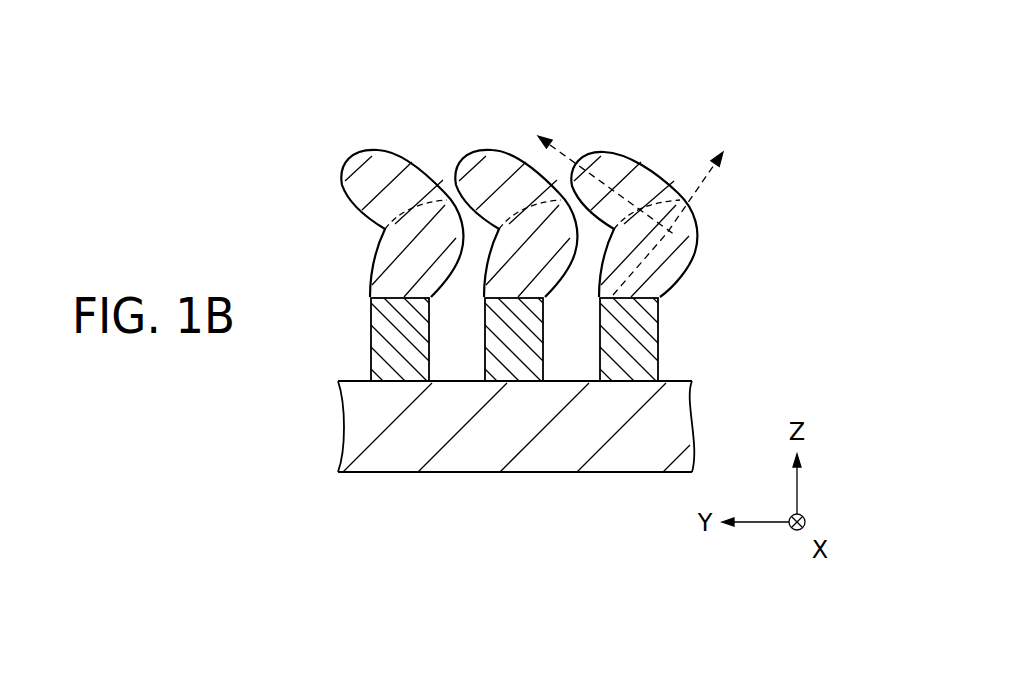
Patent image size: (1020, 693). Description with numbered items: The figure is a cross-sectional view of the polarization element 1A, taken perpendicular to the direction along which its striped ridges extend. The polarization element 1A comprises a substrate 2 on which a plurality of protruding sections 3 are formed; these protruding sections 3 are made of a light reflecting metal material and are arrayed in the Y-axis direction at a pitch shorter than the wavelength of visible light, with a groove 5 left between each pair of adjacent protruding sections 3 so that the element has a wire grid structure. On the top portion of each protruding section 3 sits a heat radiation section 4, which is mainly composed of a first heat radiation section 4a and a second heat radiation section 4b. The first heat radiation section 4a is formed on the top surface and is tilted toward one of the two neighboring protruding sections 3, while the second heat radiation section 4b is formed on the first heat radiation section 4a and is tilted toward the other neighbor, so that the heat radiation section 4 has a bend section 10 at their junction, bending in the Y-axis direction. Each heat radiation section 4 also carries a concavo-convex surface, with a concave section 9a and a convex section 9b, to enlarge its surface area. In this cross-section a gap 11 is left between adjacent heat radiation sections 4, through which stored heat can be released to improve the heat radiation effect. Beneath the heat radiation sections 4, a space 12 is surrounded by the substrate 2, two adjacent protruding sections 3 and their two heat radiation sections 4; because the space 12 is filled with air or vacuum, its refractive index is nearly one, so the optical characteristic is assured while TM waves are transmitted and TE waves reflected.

The polarization element 1A is at (694, 98).
The substrate 2 is at (680, 427).
The protruding section 3 is at (383, 340).
The heat radiation section 4 is at (709, 200).
The first heat radiation section 4a is at (673, 262).
The second heat radiation section 4b is at (632, 162).
The groove 5 is at (573, 368).
The concave section 9a is at (596, 240).
The convex section 9b is at (582, 142).
The bend section 10 is at (356, 229).
The gap 11 is at (446, 180).
The space 12 is at (457, 321).